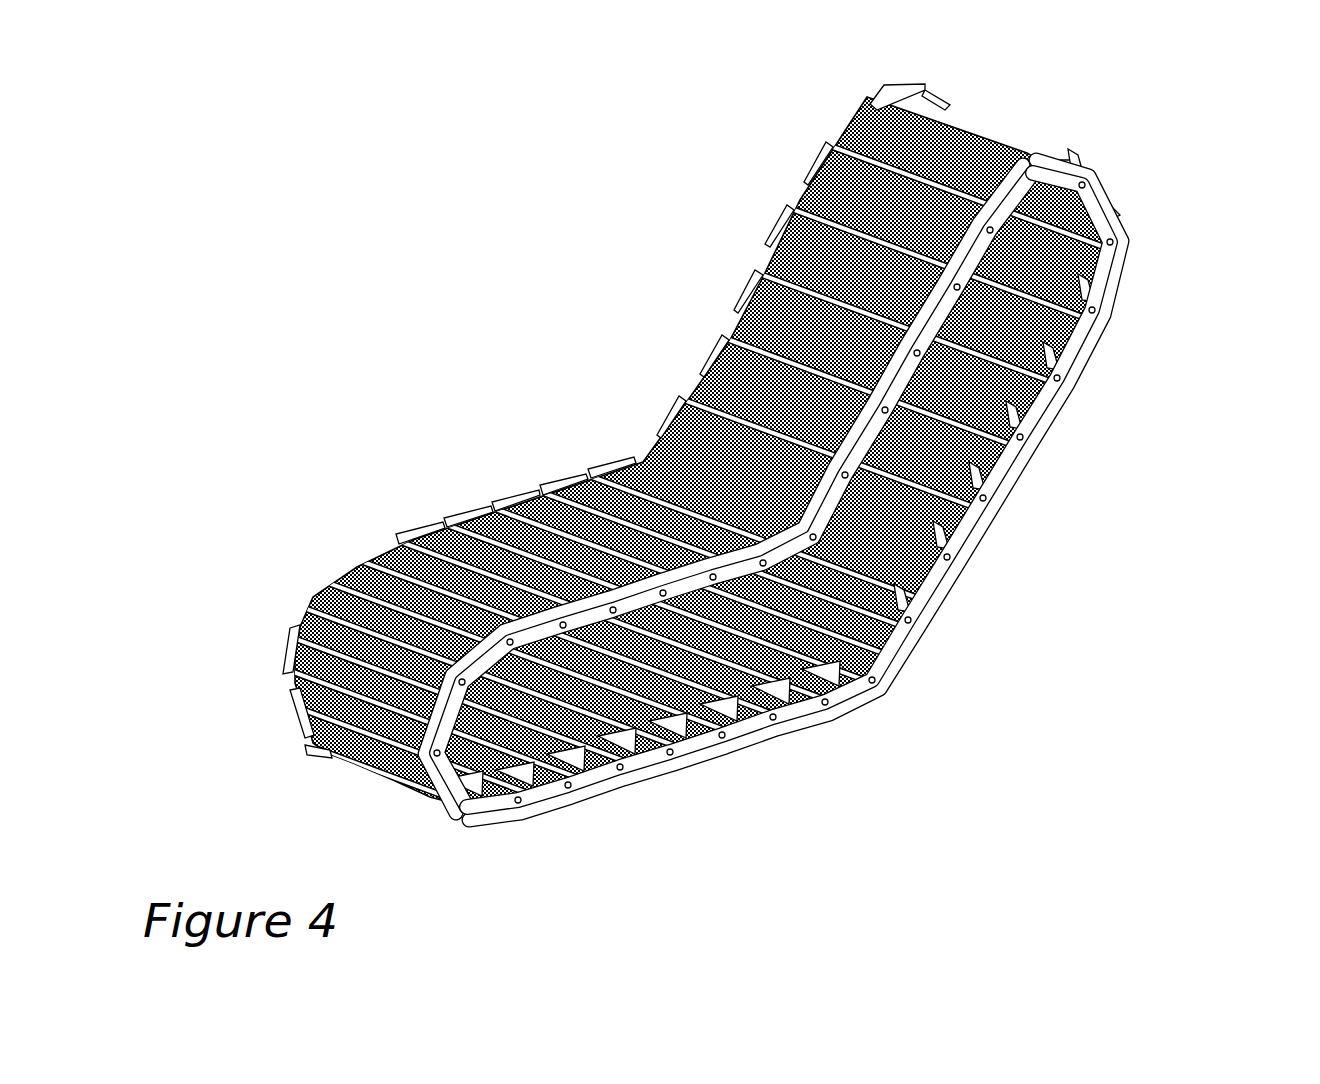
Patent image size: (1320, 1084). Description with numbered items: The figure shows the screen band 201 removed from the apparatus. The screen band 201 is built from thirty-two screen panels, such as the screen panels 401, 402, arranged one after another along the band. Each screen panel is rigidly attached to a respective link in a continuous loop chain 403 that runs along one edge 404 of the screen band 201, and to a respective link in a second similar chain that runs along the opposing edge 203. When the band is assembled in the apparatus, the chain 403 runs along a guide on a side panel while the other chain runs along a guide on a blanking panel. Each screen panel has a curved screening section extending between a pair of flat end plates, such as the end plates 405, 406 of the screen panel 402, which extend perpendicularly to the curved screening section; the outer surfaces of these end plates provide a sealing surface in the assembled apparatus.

The screen band 201 is at (841, 531).
The opposing edge 203 is at (322, 748).
The screen panel 401 is at (500, 500).
The screen panel 402 is at (580, 478).
The continuous loop chain 403 is at (930, 578).
The edge 404 is at (455, 820).
The end plate 405 is at (527, 493).
The end plate 406 is at (588, 510).